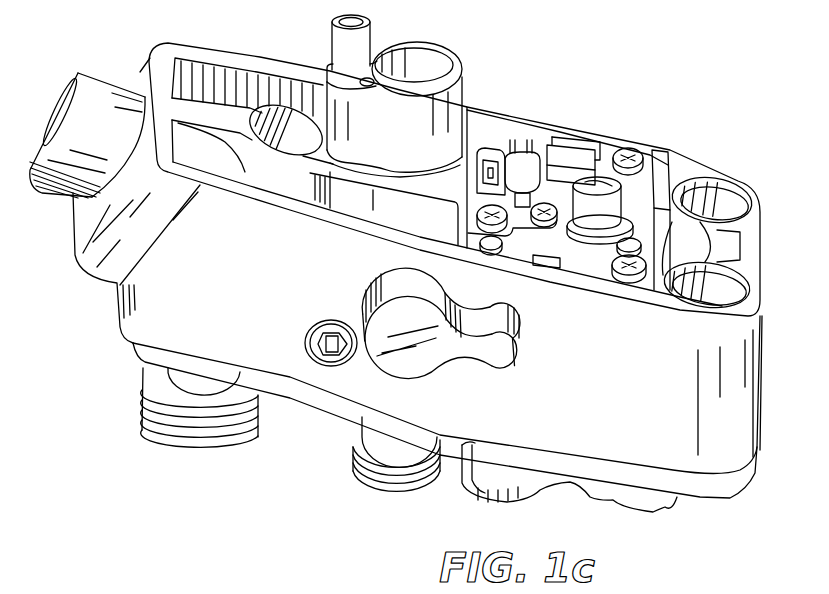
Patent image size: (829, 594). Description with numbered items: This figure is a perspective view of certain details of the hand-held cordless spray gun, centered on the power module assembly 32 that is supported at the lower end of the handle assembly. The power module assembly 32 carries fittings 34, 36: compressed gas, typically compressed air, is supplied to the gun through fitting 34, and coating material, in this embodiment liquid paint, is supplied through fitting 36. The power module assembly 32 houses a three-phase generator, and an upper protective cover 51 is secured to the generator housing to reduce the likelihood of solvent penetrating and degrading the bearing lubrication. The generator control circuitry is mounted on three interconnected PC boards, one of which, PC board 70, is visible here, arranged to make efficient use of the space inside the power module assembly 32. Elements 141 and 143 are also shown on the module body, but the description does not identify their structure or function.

The power module assembly 32 is at (699, 455).
The fitting 34 is at (390, 490).
The fitting 36 is at (213, 440).
The upper protective cover 51 is at (617, 197).
The PC board 70 is at (602, 187).
The indicator lens 141 is at (403, 360).
The button lens 143 is at (503, 357).